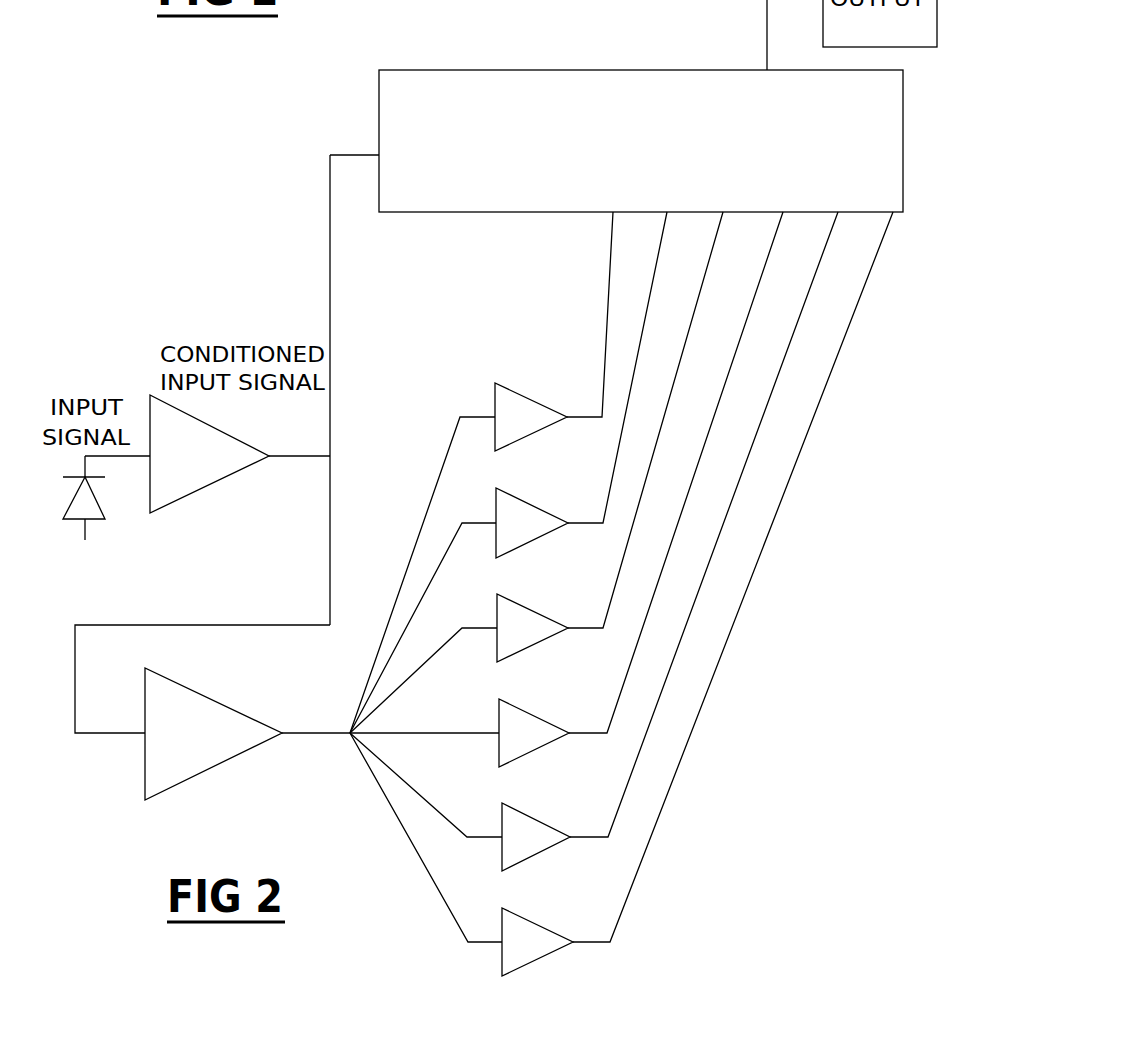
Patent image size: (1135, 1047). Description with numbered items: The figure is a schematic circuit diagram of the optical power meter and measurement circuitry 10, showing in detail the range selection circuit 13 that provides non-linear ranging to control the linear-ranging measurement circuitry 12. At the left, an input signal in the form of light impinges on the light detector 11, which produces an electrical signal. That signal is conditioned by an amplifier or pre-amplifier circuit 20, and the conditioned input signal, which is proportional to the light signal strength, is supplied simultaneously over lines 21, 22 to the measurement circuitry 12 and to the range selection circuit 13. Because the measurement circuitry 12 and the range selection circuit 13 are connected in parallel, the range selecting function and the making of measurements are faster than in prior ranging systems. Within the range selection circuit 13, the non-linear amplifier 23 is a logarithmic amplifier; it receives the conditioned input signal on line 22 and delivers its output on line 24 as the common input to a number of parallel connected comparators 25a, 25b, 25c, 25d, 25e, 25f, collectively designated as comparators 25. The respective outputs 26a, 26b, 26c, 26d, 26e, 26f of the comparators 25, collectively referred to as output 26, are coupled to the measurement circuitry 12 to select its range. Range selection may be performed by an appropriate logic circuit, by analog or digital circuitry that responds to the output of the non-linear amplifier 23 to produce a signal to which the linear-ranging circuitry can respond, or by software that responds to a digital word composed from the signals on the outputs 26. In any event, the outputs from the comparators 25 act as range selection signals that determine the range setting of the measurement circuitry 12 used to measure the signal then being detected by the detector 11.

The optical power meter and measurement circuitry 10 is at (277, 272).
The light detector 11 is at (107, 510).
The measurement circuitry 12 is at (465, 70).
The range selection circuit 13 is at (443, 315).
The amplifier or pre-amplifier circuit 20 is at (147, 410).
The line 21 is at (332, 435).
The line 22 is at (332, 573).
The non-linear amplifier 23 is at (227, 705).
The line 24 is at (318, 733).
The comparators 25 is at (487, 370).
The comparator 25a is at (550, 403).
The comparator 25b is at (550, 510).
The comparator 25c is at (550, 615).
The comparator 25d is at (551, 719).
The comparator 25e is at (552, 824).
The comparator 25f is at (553, 927).
The output 26 is at (582, 358).
The output 26a is at (608, 257).
The output 26b is at (650, 304).
The output 26c is at (680, 358).
The output 26d is at (760, 283).
The output 26e is at (793, 340).
The output 26f is at (822, 387).